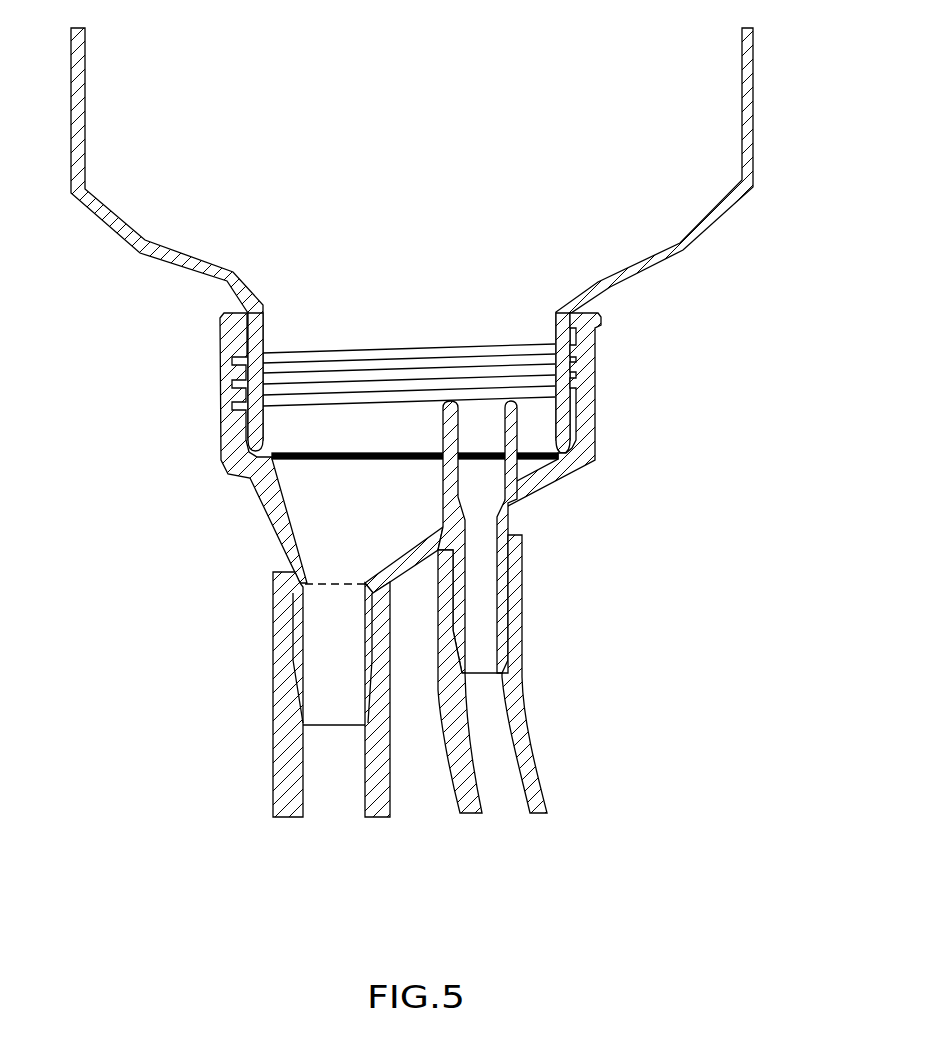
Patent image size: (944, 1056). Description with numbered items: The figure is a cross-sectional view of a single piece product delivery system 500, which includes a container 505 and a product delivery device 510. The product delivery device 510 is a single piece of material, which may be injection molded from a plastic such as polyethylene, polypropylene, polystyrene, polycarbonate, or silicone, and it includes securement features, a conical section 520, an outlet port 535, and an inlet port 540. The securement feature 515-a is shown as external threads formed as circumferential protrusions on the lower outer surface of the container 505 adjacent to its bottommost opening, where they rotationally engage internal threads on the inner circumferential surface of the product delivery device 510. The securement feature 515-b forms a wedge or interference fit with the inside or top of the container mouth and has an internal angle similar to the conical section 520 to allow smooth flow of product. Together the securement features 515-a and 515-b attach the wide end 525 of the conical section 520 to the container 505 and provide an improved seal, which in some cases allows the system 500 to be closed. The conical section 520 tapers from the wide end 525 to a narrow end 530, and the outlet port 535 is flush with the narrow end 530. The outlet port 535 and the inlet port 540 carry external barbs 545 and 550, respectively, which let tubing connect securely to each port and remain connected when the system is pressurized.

The single piece product delivery system 500 is at (577, 880).
The container 505 is at (755, 121).
The product delivery device 510 is at (219, 342).
The securement feature 515-a is at (589, 397).
The securement feature 515-b is at (272, 447).
The conical section 520 is at (197, 452).
The wide end 525 is at (415, 483).
The narrow end 530 is at (336, 572).
The outlet port 535 is at (293, 613).
The inlet port 540 is at (522, 575).
The external barb 545 is at (287, 663).
The external barb 550 is at (522, 633).